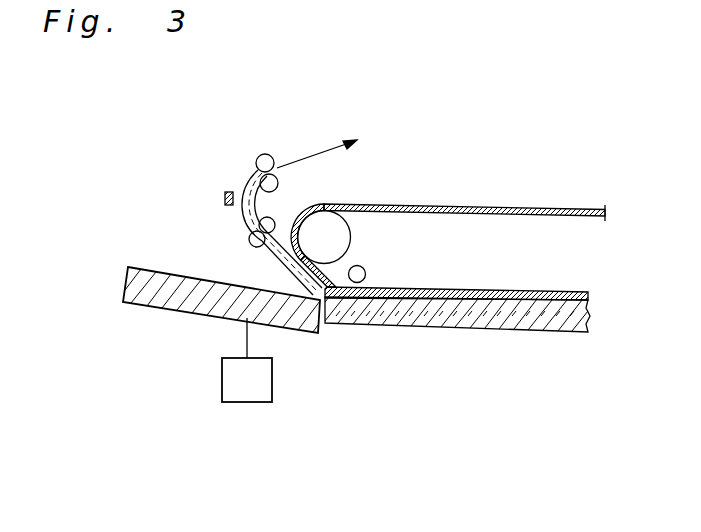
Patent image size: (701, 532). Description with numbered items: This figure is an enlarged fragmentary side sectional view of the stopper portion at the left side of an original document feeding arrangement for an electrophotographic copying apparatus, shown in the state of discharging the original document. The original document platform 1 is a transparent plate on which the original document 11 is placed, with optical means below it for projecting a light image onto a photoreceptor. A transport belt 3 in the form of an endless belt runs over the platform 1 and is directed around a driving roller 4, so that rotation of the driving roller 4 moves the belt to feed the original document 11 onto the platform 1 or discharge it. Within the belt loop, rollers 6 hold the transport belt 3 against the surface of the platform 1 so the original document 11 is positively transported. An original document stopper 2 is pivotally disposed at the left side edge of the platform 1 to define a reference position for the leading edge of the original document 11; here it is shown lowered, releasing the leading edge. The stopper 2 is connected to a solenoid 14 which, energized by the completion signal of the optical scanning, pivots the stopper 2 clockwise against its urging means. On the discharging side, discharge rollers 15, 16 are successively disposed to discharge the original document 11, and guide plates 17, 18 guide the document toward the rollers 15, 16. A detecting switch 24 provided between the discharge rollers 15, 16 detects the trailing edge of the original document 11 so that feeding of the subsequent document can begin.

The original document platform 1 is at (408, 318).
The original document stopper 2 is at (155, 292).
The transport belt 3 is at (480, 204).
The driving roller 4 is at (327, 222).
The rollers 6 is at (363, 268).
The original document 11 is at (482, 300).
The solenoid 14 is at (262, 378).
The discharge roller 15 is at (250, 238).
The discharge roller 16 is at (268, 156).
The guide plate 17 is at (283, 263).
The guide plate 18 is at (248, 180).
The detecting switch 24 is at (223, 199).